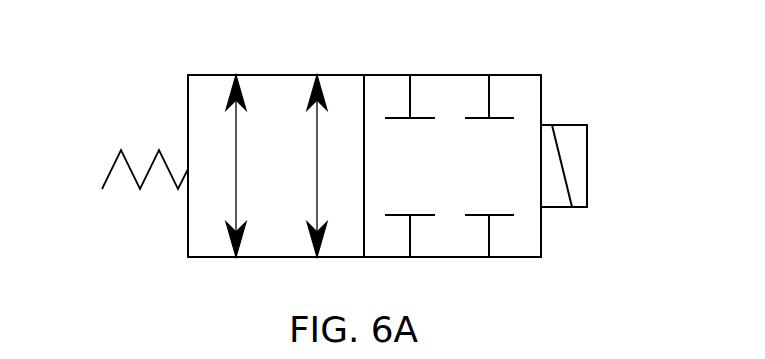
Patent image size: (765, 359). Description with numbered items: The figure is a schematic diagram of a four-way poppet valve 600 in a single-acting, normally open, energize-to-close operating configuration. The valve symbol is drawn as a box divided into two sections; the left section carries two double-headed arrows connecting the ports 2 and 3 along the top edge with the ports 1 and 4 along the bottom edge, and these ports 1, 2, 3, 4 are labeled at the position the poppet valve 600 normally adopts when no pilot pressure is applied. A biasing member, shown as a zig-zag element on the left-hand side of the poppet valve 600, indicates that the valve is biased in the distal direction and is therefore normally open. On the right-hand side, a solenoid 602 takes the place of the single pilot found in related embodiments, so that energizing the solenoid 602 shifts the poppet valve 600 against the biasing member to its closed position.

The poppet valve 600 is at (407, 152).
The solenoid 602 is at (574, 125).
The port 1 is at (236, 229).
The port 2 is at (236, 105).
The port 3 is at (317, 105).
The port 4 is at (317, 229).